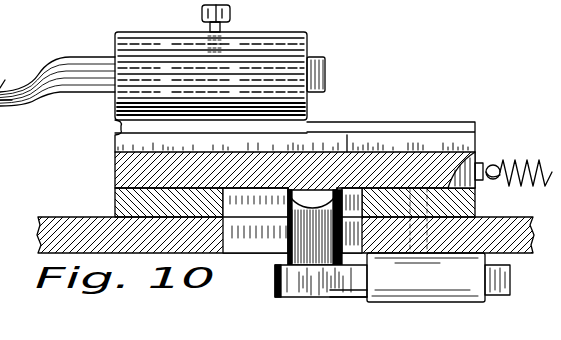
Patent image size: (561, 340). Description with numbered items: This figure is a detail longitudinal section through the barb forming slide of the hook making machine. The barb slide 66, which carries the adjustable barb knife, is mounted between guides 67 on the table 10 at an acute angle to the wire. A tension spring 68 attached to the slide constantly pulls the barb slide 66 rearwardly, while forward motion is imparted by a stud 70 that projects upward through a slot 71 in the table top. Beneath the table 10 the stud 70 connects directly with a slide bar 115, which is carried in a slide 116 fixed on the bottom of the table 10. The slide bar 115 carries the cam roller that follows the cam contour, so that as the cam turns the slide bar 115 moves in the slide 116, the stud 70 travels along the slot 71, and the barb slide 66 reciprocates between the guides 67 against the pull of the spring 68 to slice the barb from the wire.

The table 10 is at (87, 222).
The barb slide 66 is at (293, 43).
The guides 67 is at (408, 140).
The tension spring 68 is at (522, 170).
The stud 70 is at (303, 260).
The slot 71 is at (260, 242).
The slide bar 115 is at (503, 273).
The slide 116 is at (470, 295).